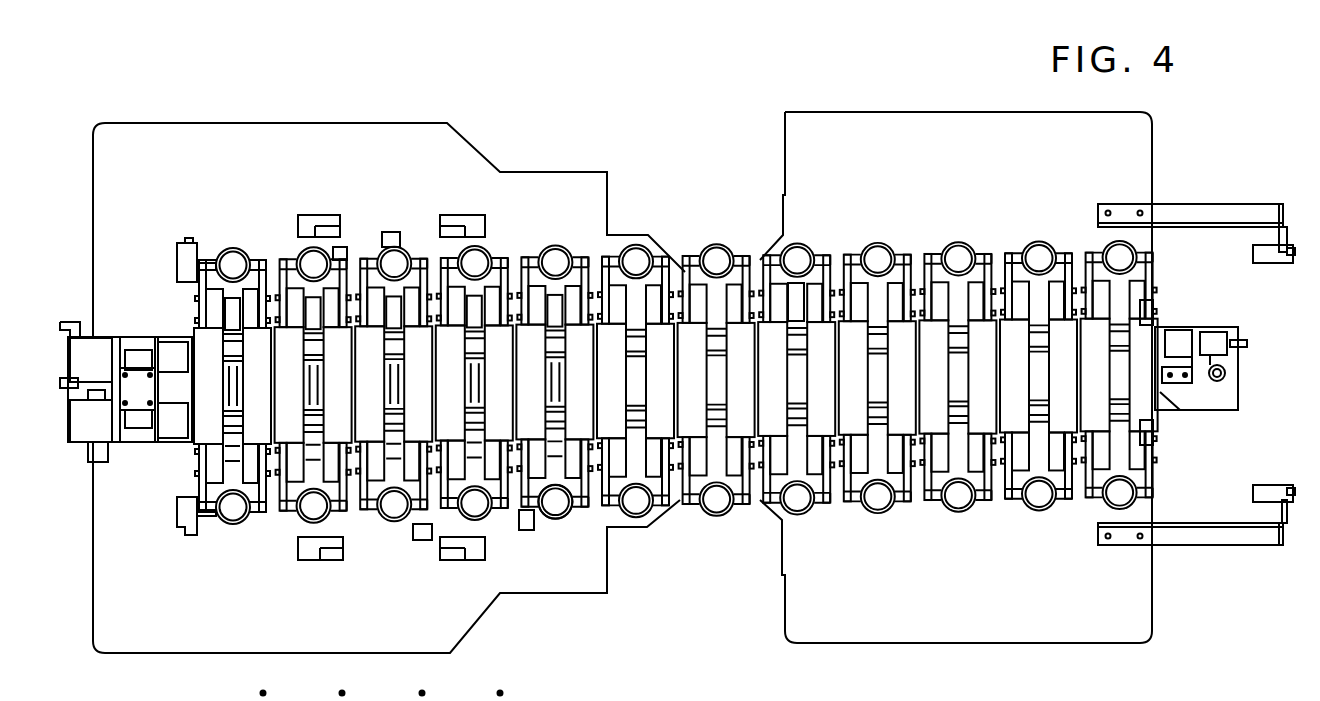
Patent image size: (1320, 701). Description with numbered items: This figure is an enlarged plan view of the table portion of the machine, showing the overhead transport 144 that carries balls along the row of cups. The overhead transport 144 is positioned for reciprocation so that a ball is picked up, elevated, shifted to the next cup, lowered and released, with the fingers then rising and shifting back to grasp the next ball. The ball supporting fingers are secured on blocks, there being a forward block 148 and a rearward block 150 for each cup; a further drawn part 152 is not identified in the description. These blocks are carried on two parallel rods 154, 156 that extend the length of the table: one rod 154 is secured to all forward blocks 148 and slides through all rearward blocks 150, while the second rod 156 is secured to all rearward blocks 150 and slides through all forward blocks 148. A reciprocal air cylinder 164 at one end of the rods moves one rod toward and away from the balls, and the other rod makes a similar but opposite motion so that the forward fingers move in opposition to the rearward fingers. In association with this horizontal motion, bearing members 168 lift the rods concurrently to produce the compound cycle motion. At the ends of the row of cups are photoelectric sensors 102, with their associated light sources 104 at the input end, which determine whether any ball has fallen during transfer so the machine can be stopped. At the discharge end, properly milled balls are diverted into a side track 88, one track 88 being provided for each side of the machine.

The side track 88 is at (1220, 211).
The sensor 102 is at (177, 263).
The light source 104 is at (1270, 263).
The overhead transport 144 is at (678, 228).
The forward block 148 is at (374, 518).
The rearward block 150 is at (413, 530).
The forming roll 152 is at (582, 512).
The rod 154 is at (1148, 313).
The second rod 156 is at (1148, 436).
The reciprocal air cylinder 164 is at (1232, 340).
The bearing member 168 is at (797, 318).